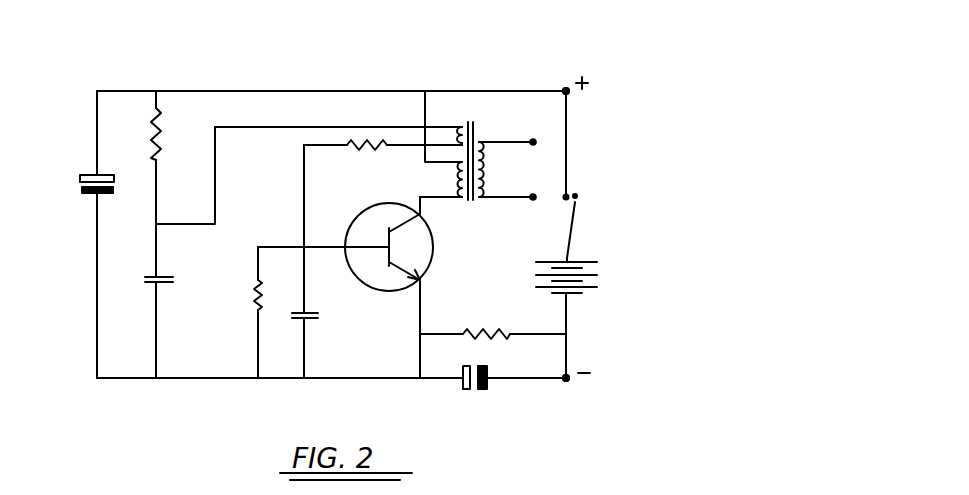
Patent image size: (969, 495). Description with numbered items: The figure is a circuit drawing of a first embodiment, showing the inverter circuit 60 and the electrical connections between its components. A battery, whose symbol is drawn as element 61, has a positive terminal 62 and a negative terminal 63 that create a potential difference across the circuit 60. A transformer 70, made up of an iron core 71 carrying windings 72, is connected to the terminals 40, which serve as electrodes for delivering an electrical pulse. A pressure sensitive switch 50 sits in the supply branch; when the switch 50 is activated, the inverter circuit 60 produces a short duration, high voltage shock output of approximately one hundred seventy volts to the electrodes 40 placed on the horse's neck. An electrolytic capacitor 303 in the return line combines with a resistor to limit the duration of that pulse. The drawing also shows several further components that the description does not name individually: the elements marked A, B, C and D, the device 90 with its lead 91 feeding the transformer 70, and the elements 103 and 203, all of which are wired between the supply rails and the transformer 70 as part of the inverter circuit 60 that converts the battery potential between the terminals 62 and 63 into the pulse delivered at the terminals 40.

The circuit 60 is at (97, 83).
The resistor A is at (148, 136).
The capacitor 103 is at (175, 295).
The resistor B is at (257, 298).
The capacitor 203 is at (325, 328).
The electrolytic capacitor 303 is at (479, 392).
The resistor D is at (358, 142).
The transistor 90 is at (403, 229).
The transistor base lead 91 is at (327, 244).
The transformer 70 is at (507, 128).
The iron core 71 is at (478, 200).
The windings 72 is at (486, 163).
The terminals 40 is at (538, 196).
The positive terminal 62 is at (568, 94).
The pressure sensitive switch 50 is at (580, 208).
The battery 61 is at (605, 272).
The resistor C is at (512, 334).
The negative terminal 63 is at (568, 381).